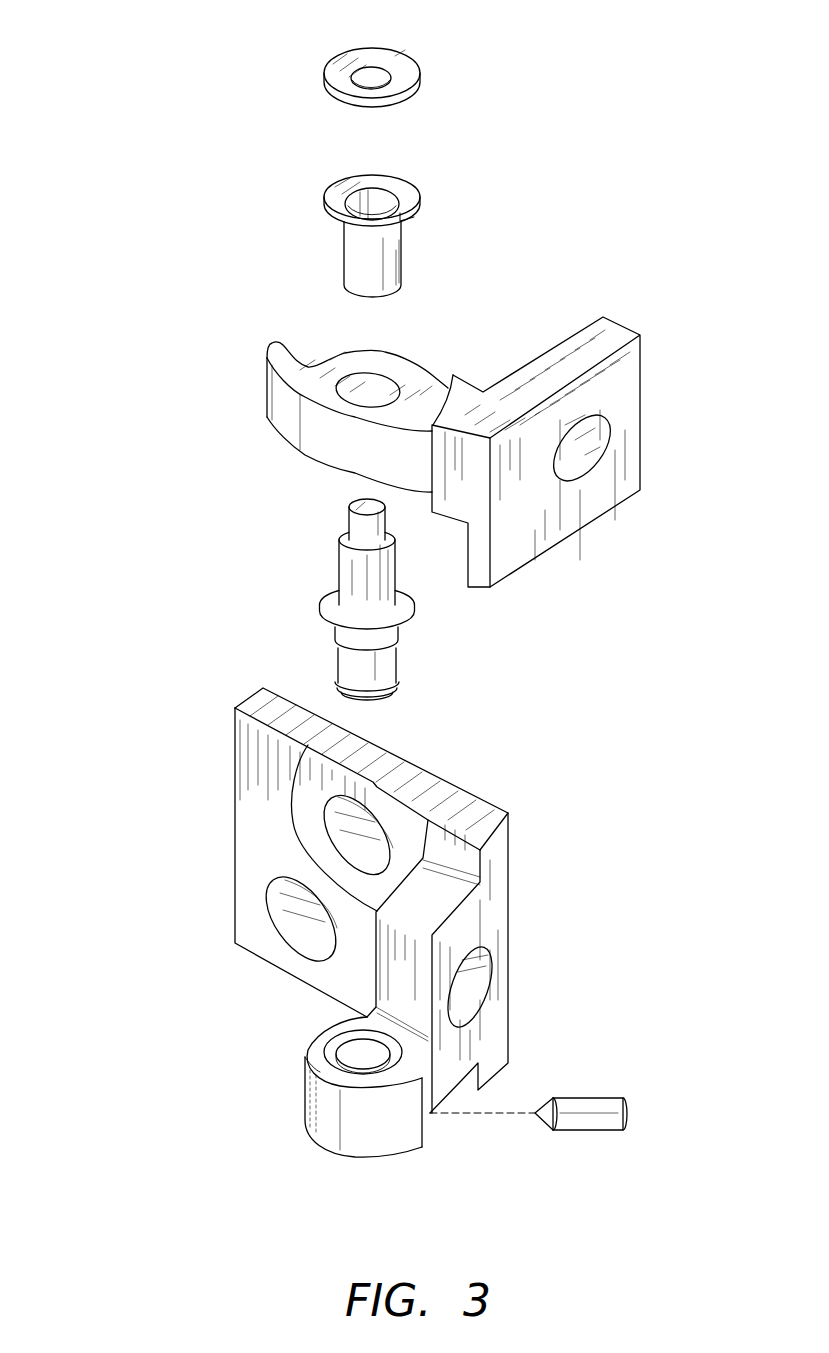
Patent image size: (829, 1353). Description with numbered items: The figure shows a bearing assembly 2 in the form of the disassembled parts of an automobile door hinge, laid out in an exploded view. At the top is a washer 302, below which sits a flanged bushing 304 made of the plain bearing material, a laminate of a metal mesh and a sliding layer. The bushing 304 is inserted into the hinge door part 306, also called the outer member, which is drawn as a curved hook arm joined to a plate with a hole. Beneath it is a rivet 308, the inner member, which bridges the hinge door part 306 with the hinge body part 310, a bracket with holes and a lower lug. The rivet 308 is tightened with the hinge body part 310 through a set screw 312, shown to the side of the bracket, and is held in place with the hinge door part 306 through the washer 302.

The bearing assembly 2 is at (121, 36).
The washer 302 is at (420, 84).
The bushing 304 is at (402, 260).
The hinge door part 306 is at (640, 410).
The rivet 308 is at (398, 665).
The hinge body part 310 is at (508, 872).
The set screw 312 is at (625, 1110).